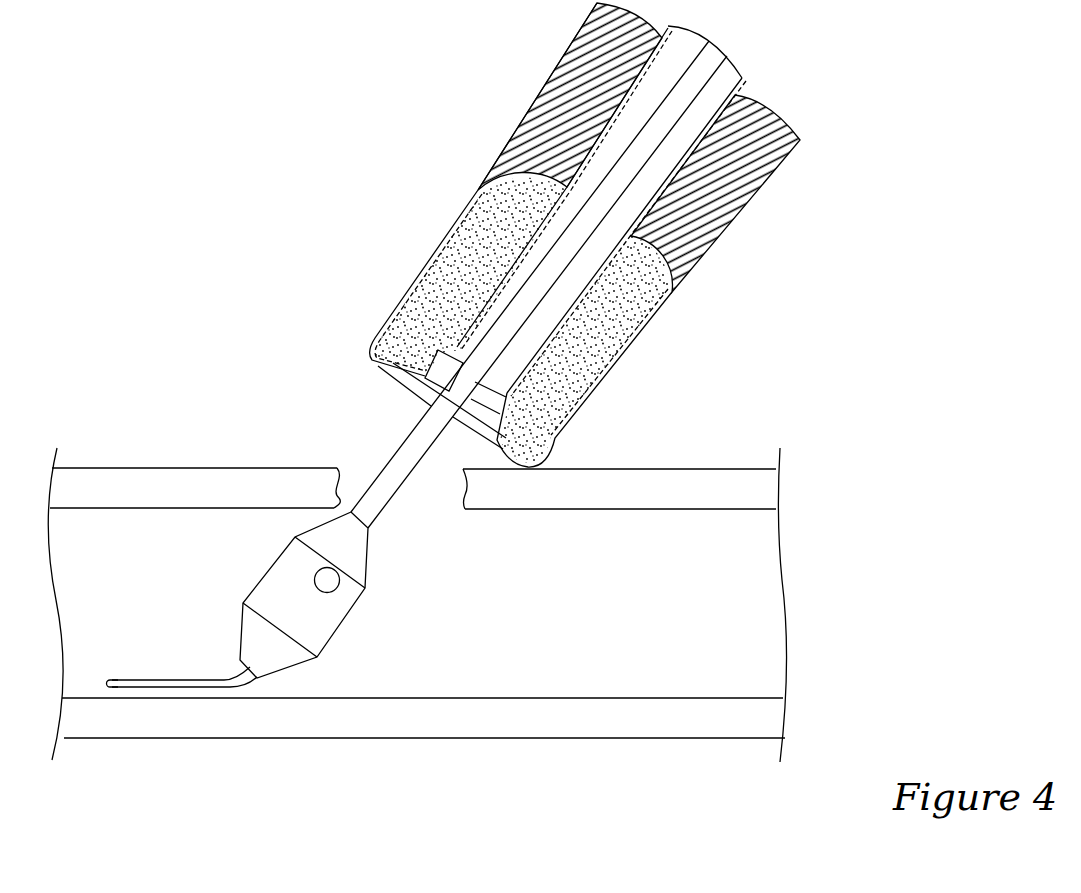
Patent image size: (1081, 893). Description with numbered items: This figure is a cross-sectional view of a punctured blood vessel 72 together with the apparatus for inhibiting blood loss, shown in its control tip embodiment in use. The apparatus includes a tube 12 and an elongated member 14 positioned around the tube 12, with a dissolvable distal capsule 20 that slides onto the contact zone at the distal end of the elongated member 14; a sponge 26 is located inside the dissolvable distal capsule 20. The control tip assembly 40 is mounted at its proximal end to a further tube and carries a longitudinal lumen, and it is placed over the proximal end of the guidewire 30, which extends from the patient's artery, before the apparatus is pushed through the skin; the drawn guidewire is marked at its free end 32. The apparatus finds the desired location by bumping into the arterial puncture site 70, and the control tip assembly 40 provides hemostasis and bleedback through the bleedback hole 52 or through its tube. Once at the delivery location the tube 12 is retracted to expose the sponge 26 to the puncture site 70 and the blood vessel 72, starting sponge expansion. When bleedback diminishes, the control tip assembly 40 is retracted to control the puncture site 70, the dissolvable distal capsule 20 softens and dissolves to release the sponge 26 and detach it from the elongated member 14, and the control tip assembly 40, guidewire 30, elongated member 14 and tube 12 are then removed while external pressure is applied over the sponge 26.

The tube 12 is at (597, 150).
The elongated member 14 is at (710, 203).
The dissolvable distal capsule 20 is at (638, 337).
The sponge 26 is at (568, 385).
The arterial puncture site 70 is at (430, 500).
The control tip assembly 40 is at (378, 605).
The bleedback hole 52 is at (330, 590).
The guidewire 30 is at (225, 678).
The guidewire tip 32 is at (107, 675).
The blood vessel 72 is at (193, 468).